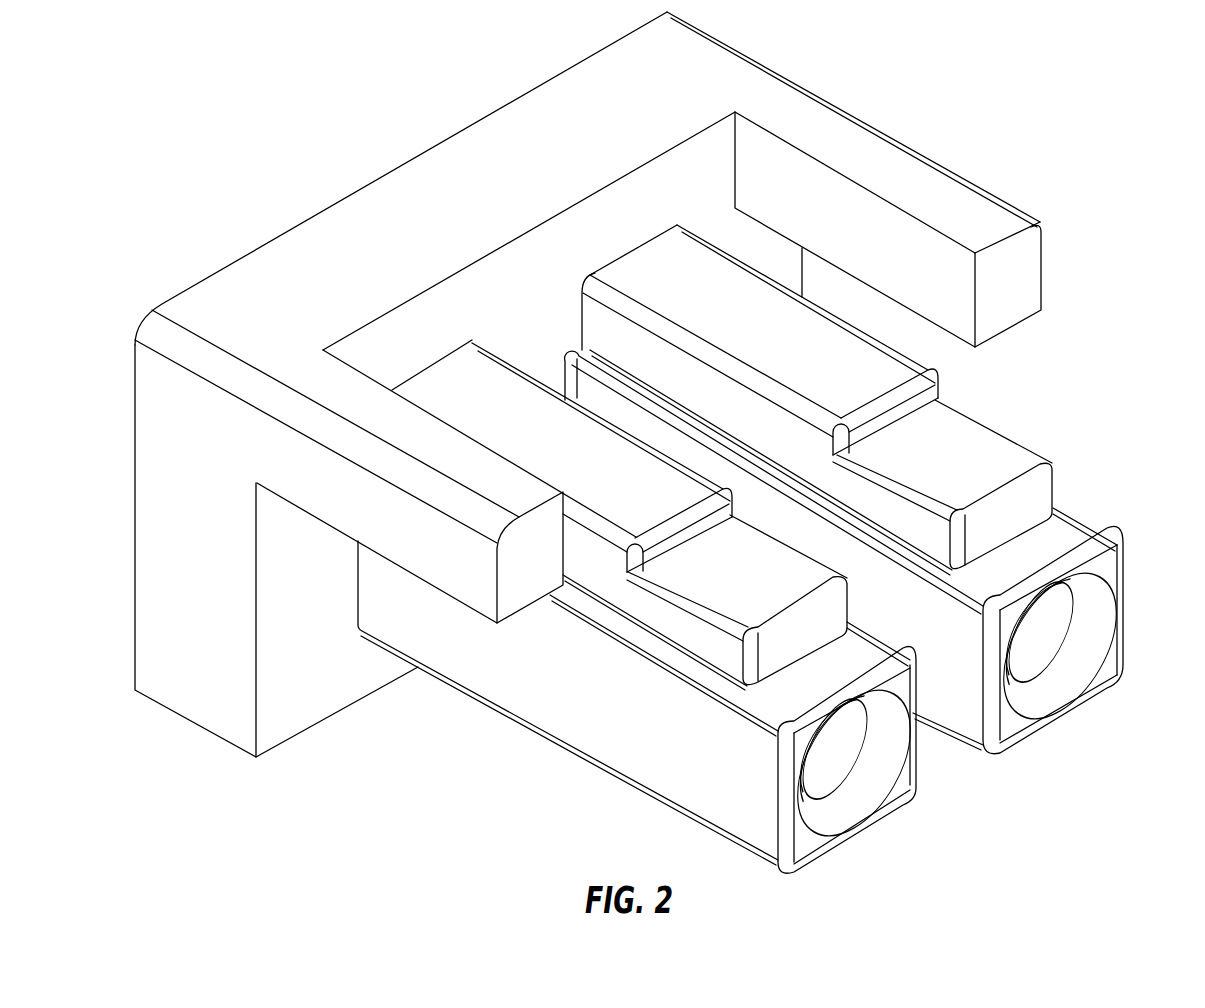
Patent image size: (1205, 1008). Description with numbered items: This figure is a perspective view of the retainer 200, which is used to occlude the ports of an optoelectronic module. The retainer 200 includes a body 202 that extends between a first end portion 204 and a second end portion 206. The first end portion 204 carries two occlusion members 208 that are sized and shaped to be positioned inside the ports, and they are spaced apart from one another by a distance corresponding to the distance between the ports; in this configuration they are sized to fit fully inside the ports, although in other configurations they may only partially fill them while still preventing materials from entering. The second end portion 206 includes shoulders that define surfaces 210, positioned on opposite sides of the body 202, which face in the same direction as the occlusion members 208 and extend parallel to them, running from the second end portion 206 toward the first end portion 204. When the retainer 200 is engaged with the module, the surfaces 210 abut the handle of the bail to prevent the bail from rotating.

The retainer 200 is at (157, 115).
The body 202 is at (390, 210).
The first end portion 204 is at (747, 867).
The second end portion 206 is at (153, 710).
The occlusion members 208 is at (893, 797).
The surfaces 210 is at (438, 447).